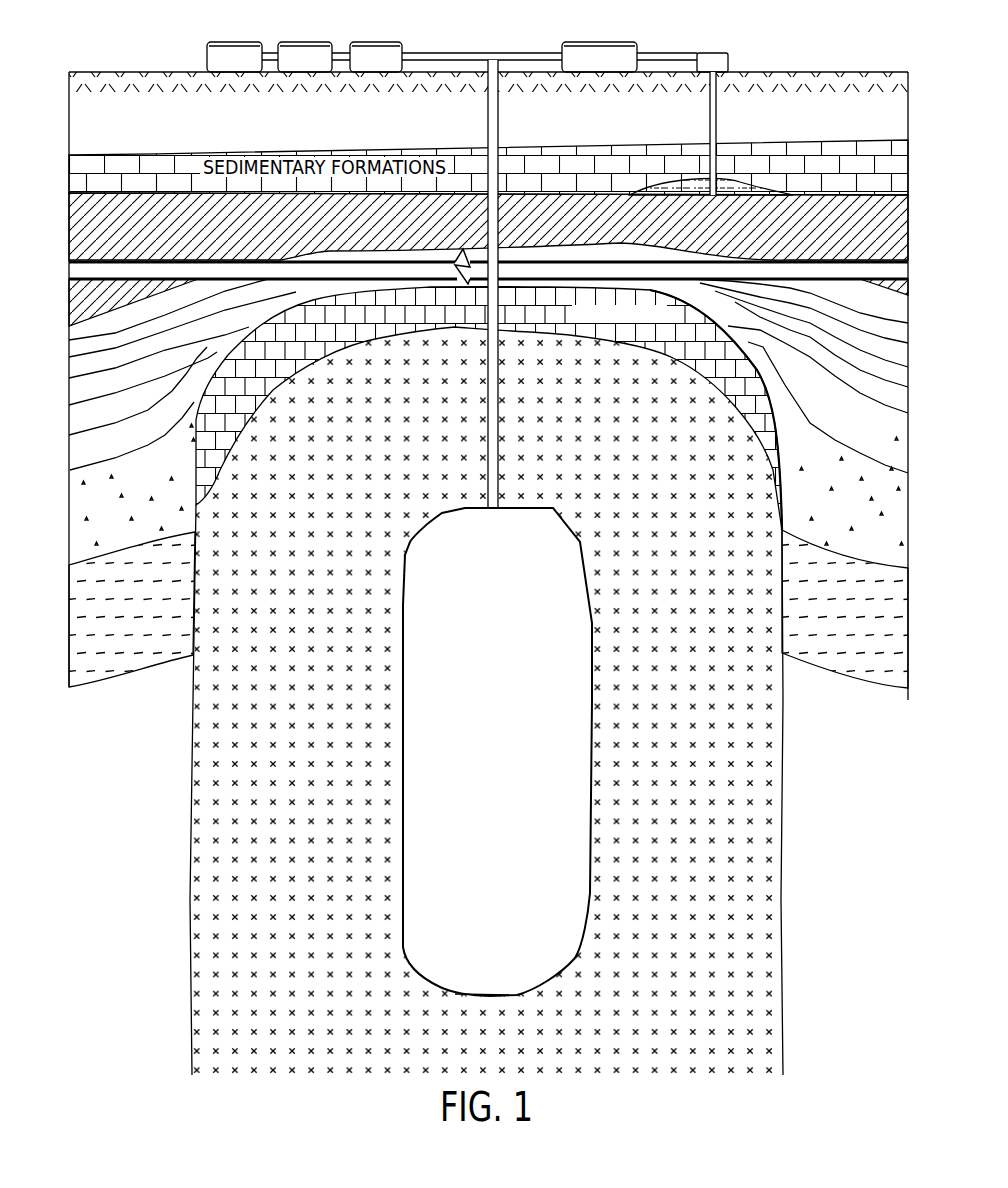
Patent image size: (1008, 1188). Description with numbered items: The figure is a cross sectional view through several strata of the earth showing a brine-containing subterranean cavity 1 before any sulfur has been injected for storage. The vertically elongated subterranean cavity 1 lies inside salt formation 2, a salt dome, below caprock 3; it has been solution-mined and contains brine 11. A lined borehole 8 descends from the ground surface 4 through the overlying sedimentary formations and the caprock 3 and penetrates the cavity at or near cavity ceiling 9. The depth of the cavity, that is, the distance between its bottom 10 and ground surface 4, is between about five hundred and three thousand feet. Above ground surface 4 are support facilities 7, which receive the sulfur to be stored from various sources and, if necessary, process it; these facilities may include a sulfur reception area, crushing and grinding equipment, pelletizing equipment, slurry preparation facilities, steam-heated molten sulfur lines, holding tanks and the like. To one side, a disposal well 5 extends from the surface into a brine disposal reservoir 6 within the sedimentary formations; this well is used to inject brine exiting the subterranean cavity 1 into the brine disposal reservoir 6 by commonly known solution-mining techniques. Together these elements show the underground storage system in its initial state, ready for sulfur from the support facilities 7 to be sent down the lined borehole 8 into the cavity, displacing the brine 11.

The subterranean cavity 1 is at (500, 677).
The salt formation 2 is at (760, 528).
The caprock 3 is at (723, 367).
The ground surface 4 is at (777, 72).
The disposal well 5 is at (716, 115).
The brine disposal reservoir 6 is at (740, 192).
The support facilities 7 is at (305, 42).
The lined borehole 8 is at (500, 115).
The cavity ceiling 9 is at (523, 507).
The bottom 10 is at (552, 987).
The brine 11 is at (494, 921).